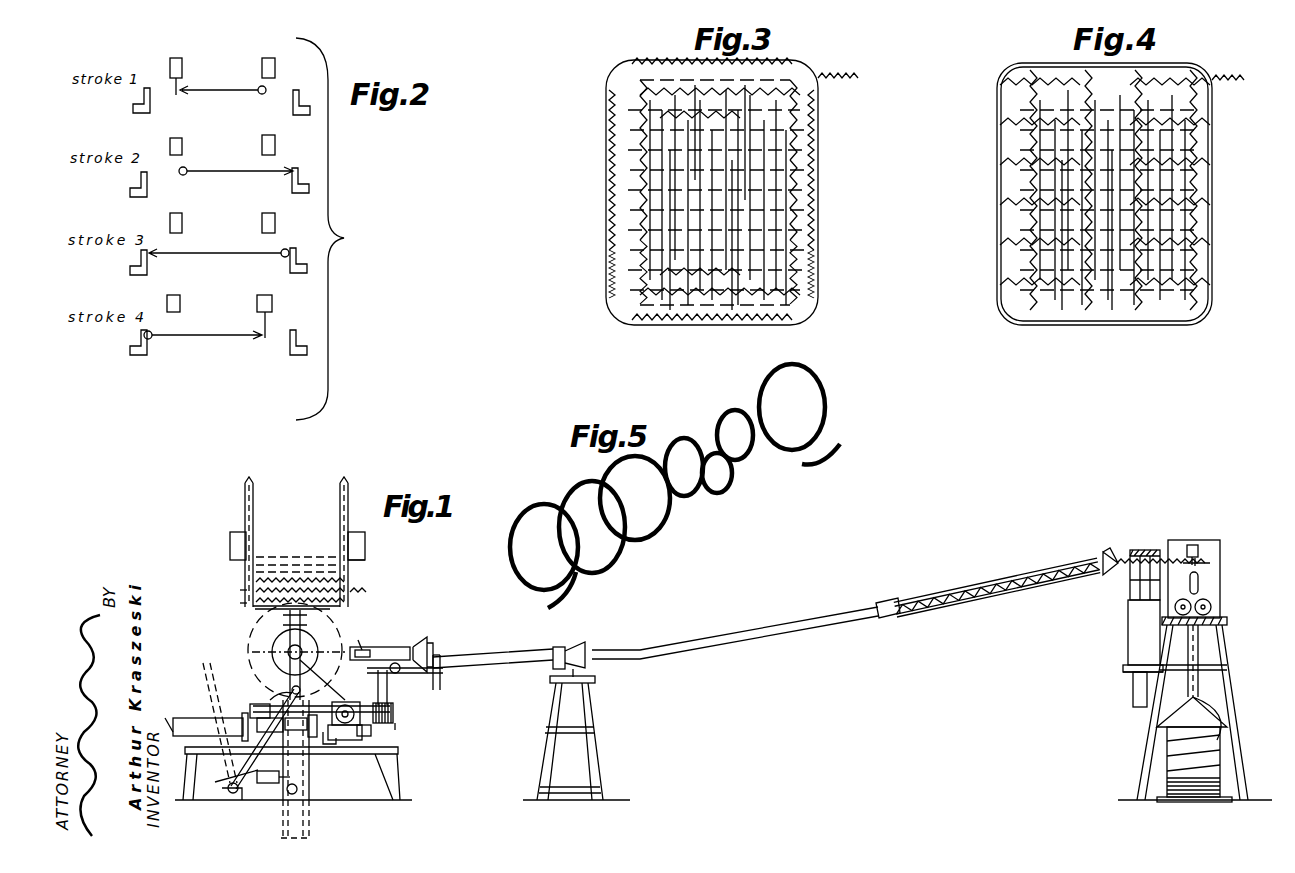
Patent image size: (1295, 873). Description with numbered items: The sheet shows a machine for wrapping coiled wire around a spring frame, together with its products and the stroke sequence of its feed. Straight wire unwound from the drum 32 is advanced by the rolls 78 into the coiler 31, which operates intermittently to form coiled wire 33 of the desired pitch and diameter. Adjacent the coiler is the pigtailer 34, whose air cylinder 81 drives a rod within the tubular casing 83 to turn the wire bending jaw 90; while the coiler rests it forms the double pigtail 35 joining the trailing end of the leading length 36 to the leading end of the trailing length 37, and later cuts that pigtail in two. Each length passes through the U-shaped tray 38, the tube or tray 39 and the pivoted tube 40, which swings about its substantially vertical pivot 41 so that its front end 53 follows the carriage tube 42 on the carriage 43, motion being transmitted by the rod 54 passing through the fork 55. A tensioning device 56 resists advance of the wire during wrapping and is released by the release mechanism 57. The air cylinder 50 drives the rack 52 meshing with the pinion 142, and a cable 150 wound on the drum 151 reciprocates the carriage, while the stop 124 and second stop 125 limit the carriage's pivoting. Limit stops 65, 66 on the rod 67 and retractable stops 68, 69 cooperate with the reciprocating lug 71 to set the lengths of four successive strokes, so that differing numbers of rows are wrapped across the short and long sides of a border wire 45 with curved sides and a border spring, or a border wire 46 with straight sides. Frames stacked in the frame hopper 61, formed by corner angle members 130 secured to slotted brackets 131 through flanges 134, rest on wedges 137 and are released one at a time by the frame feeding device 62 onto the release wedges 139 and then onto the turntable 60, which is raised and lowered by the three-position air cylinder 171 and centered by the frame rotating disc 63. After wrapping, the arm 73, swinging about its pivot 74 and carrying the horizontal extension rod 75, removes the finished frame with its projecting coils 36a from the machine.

In FIG. 1, the coiler 31 is at (1229, 572).
In FIG. 1, the drum 32 is at (1168, 750).
In FIG. 5, the coiled wire 33 is at (655, 548).
In FIG. 1, the coiled wire 33 is at (1122, 555).
In FIG. 1, the pigtailer 34 is at (1120, 629).
In FIG. 5, the double pigtail 35 is at (727, 484).
In FIG. 1, the double pigtail 35 is at (1169, 549).
In FIG. 1, the leading length 36 is at (914, 601).
In FIG. 3, the projecting coils 36a is at (850, 66).
In FIG. 4, the projecting coils 36a is at (1237, 63).
In FIG. 1, the trailing length 37 is at (1079, 574).
In FIG. 1, the U-shaped tray 38 is at (994, 583).
In FIG. 1, the tube or tray 39 is at (830, 615).
In FIG. 1, the pivoted tube 40 is at (519, 656).
In FIG. 1, the pivot 41 is at (553, 668).
In FIG. 1, the carriage tube 42 is at (410, 645).
In FIG. 1, the carriage 43 is at (368, 712).
In FIG. 3, the border wire 45 is at (816, 152).
In FIG. 1, the border wire 45 is at (330, 583).
In FIG. 4, the border wire 46 is at (1210, 186).
In FIG. 1, the air cylinder 50 is at (210, 718).
In FIG. 1, the rack 52 is at (377, 723).
In FIG. 1, the front end 53 is at (440, 656).
In FIG. 1, the rod 54 is at (403, 675).
In FIG. 1, the fork 55 is at (446, 684).
In FIG. 1, the tensioning device 56 is at (393, 647).
In FIG. 1, the release mechanism 57 is at (360, 646).
In FIG. 1, the turntable 60 is at (290, 692).
In FIG. 1, the frame hopper 61 is at (262, 508).
In FIG. 1, the frame feeding device 62 is at (233, 611).
In FIG. 1, the frame rotating disc 63 is at (275, 645).
In FIG. 2, the limit stop 65 is at (135, 118).
In FIG. 1, the limit stop 65 is at (236, 767).
In FIG. 2, the limit stop 66 is at (300, 116).
In FIG. 1, the limit stop 66 is at (327, 748).
In FIG. 1, the rod 67 is at (295, 771).
In FIG. 2, the retractable stop 68 is at (182, 63).
In FIG. 1, the retractable stop 68 is at (271, 709).
In FIG. 2, the retractable stop 69 is at (271, 57).
In FIG. 1, the reciprocating lug 71 is at (1205, 649).
In FIG. 1, the arm 73 is at (203, 700).
In FIG. 1, the pivot 74 is at (236, 794).
In FIG. 1, the horizontal extension rod 75 is at (306, 666).
In FIG. 1, the rolls 78 is at (1212, 604).
In FIG. 1, the air cylinder 81 is at (1137, 691).
In FIG. 1, the tubular casing 83 is at (1130, 636).
In FIG. 1, the wire bending jaw 90 is at (1133, 588).
In FIG. 1, the stop 124 is at (392, 672).
In FIG. 1, the second stop 125 is at (394, 714).
In FIG. 1, the corner angle members 130 is at (349, 496).
In FIG. 1, the slotted brackets 131 is at (366, 555).
In FIG. 1, the flange 134 is at (366, 538).
In FIG. 1, the wedges 137 is at (242, 596).
In FIG. 1, the release wedges 139 is at (355, 596).
In FIG. 1, the pinion 142 is at (360, 728).
In FIG. 1, the cable 150 is at (380, 697).
In FIG. 1, the drum 151 is at (420, 730).
In FIG. 1, the three-position air cylinder 171 is at (299, 790).